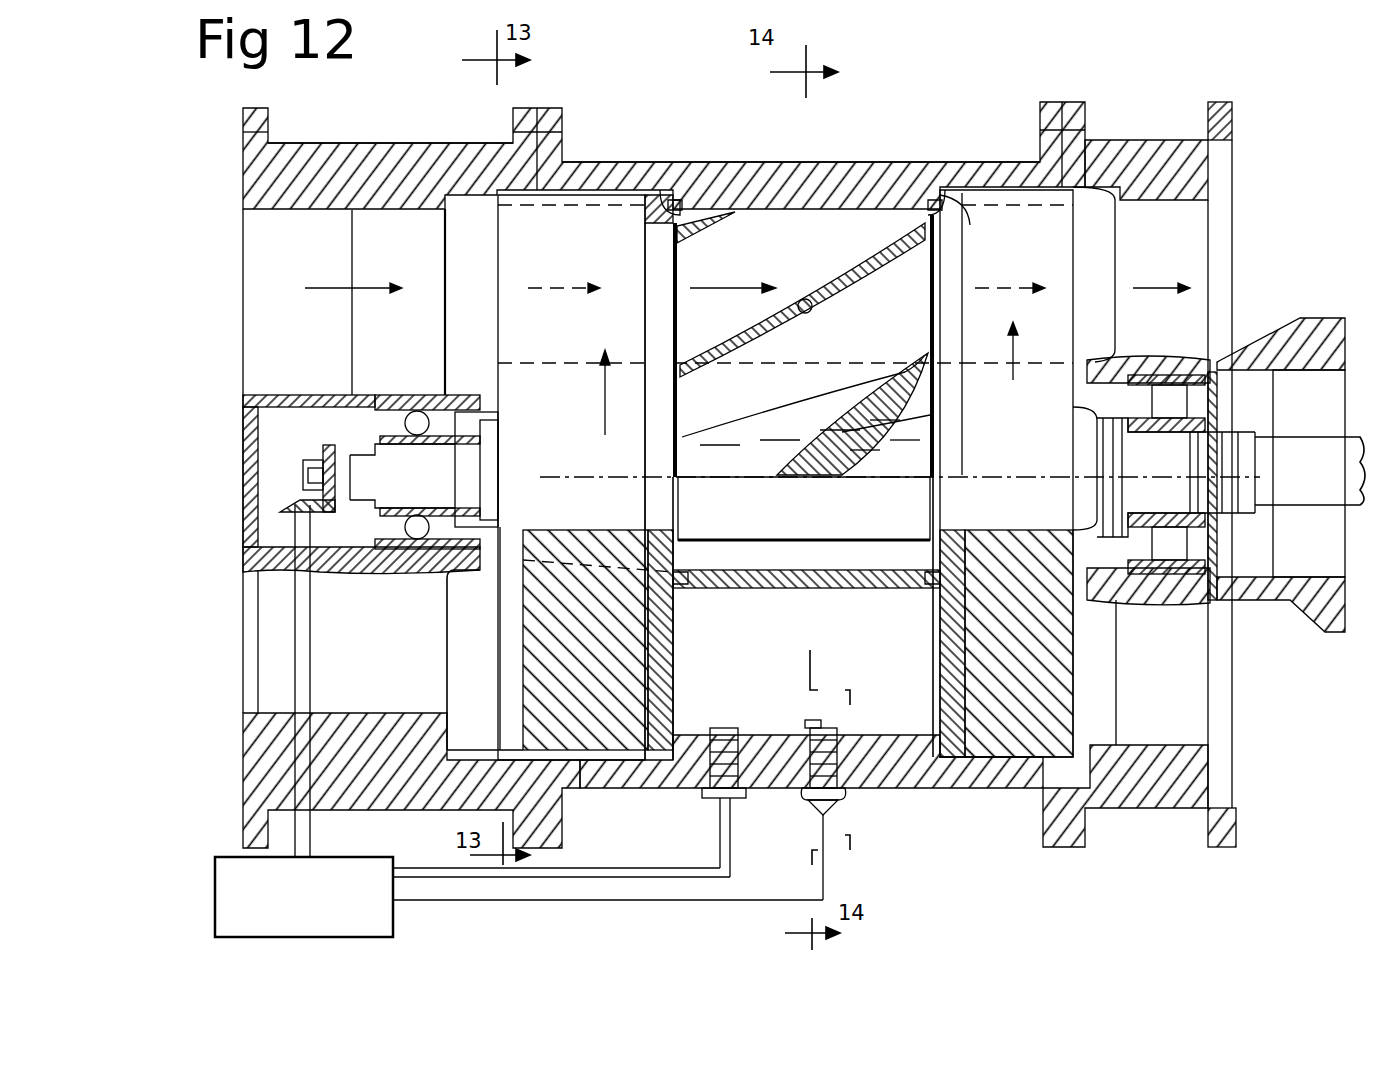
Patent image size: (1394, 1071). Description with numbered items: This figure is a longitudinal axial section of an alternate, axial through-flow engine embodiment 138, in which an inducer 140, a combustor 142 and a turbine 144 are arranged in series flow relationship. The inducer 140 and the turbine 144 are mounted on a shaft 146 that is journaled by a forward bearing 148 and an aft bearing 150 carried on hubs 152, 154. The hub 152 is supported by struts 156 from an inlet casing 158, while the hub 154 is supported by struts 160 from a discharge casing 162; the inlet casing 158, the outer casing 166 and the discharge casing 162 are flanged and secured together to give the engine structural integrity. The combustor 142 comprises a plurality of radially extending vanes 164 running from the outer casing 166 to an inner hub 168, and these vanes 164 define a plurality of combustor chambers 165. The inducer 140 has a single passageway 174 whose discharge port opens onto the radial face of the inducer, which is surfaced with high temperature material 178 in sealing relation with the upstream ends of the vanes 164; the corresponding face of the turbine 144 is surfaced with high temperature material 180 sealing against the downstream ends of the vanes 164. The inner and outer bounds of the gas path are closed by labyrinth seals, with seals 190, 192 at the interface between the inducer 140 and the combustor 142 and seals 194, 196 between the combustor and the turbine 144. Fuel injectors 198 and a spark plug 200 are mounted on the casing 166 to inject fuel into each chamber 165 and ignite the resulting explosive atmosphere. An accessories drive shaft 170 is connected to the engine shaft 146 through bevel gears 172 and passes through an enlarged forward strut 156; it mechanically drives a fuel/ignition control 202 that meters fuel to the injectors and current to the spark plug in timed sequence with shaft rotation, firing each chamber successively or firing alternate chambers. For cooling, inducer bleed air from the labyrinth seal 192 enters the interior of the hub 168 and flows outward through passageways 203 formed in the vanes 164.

The compressor housing assembly 138 is at (233, 217).
The inducer 140 is at (520, 270).
The combustor 142 is at (688, 288).
The turbine 144 is at (975, 258).
The shaft 146 is at (1350, 370).
The bearing 148 is at (405, 575).
The bearing 150 is at (1180, 545).
The hub 152 is at (325, 395).
The hub 154 is at (1100, 358).
The struts 156 is at (352, 230).
The inlet casing 158 is at (330, 143).
The struts 160 is at (1212, 258).
The discharge casing 162 is at (1125, 140).
The vanes 164 is at (858, 300).
The combustor chamber 165 is at (817, 447).
The outer casing 166 is at (628, 162).
The inner hub 168 is at (736, 590).
The accessories drive shaft 170 is at (312, 530).
The bevel gears 172 is at (325, 447).
The passageway 174 is at (523, 638).
The high temperature material 178 is at (684, 198).
The high temperature material 180 is at (940, 200).
The labyrinth seal 190 is at (680, 218).
The labyrinth seal 192 is at (690, 570).
The labyrinth seal 194 is at (955, 208).
The labyrinth seal 196 is at (928, 575).
The fuel injectors 198 is at (727, 728).
The spark plug 200 is at (838, 722).
The fuel/ignition control 202 is at (345, 857).
The passageways 203 is at (806, 300).